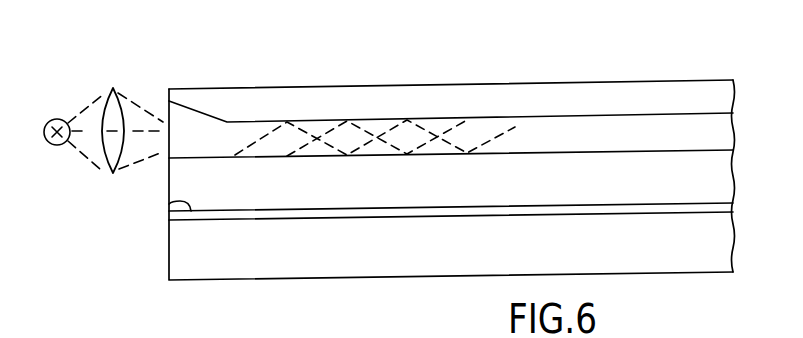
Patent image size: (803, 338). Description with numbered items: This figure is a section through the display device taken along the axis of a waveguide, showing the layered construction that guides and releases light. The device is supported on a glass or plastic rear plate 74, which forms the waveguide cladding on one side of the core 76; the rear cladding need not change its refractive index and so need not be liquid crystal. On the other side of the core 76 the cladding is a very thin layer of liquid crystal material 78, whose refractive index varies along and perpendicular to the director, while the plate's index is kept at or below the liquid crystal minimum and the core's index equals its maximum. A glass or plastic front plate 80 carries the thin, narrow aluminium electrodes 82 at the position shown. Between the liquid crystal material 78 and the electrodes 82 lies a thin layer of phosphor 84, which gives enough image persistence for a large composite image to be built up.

The rear plate 74 is at (575, 93).
The core 76 is at (518, 142).
The liquid crystal material 78 is at (440, 176).
The front plate 80 is at (398, 252).
The electrodes 82 is at (322, 212).
The phosphor 84 is at (170, 209).